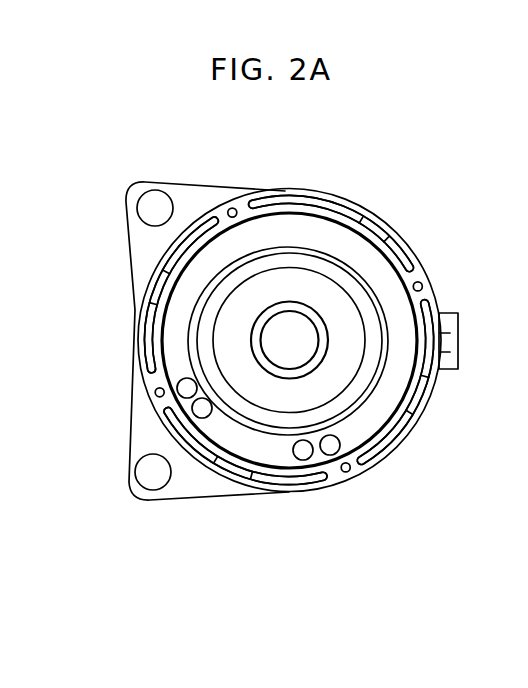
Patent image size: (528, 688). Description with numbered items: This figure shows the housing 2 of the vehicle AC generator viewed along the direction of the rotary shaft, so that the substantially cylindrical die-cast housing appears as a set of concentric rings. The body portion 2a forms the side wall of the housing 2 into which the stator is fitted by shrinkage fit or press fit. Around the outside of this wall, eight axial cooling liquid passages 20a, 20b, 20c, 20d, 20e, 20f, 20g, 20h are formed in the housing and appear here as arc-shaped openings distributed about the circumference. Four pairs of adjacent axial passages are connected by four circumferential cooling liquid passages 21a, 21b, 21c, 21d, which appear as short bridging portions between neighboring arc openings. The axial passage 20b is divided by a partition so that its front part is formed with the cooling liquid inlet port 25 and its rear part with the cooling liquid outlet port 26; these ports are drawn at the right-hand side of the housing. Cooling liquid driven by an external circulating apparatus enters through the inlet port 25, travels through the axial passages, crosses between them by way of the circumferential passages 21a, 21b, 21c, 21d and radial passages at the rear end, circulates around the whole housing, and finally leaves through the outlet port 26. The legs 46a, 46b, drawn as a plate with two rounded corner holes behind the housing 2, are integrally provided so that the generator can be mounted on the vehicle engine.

The housing 2 is at (322, 196).
The body portion 2a is at (250, 200).
The axial cooling liquid passage 20a is at (395, 238).
The axial cooling liquid passage 20b is at (437, 306).
The axial cooling liquid passage 20c is at (398, 444).
The axial cooling liquid passage 20d is at (292, 490).
The axial cooling liquid passage 20e is at (178, 443).
The axial cooling liquid passage 20f is at (142, 334).
The axial cooling liquid passage 20g is at (185, 232).
The axial cooling liquid passage 20h is at (290, 198).
The circumferential cooling liquid passage 21a is at (432, 394).
The circumferential cooling liquid passage 21b is at (227, 480).
The circumferential cooling liquid passage 21c is at (150, 280).
The circumferential cooling liquid passage 21d is at (363, 218).
The cooling liquid inlet port 25 is at (450, 333).
The cooling liquid outlet port 26 is at (450, 352).
The leg 46a is at (138, 425).
The leg 46b is at (190, 195).